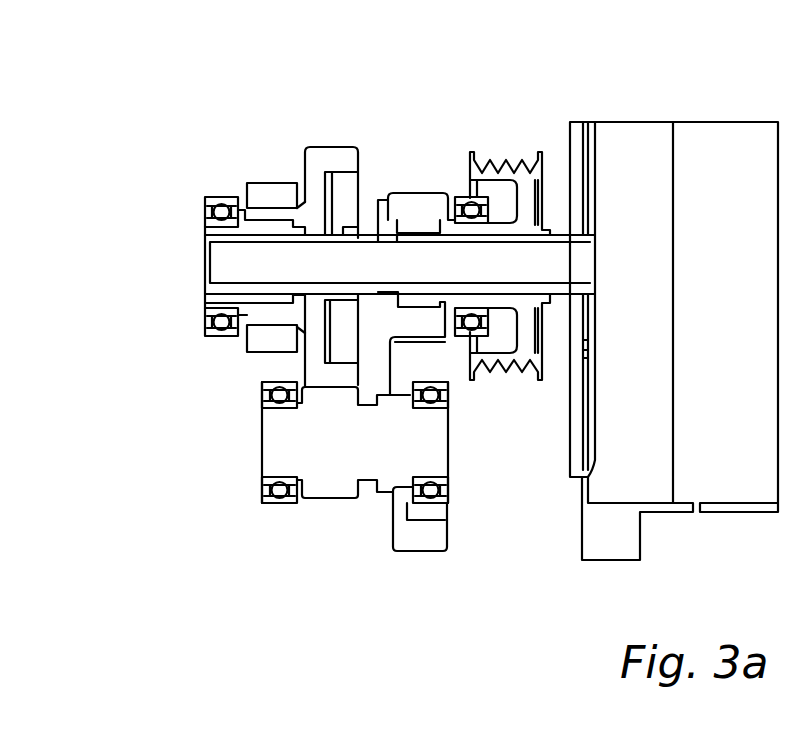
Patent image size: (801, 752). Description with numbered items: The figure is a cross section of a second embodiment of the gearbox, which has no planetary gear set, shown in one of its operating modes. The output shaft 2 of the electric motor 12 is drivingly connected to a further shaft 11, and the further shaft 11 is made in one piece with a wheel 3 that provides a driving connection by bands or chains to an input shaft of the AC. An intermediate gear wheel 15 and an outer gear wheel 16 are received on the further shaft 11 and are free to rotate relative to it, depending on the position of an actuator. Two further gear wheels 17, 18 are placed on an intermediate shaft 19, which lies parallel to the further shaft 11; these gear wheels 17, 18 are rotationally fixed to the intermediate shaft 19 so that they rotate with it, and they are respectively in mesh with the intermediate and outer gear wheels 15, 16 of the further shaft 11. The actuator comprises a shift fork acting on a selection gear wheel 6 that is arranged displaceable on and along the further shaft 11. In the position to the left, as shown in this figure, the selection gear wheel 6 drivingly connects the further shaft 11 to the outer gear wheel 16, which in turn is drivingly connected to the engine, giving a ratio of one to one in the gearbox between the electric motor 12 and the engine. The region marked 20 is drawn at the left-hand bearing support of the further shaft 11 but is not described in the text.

The output shaft 2 is at (555, 263).
The wheel 3 is at (507, 160).
The selection gear wheel 6 is at (318, 298).
The further shaft 11 is at (233, 268).
The electric motor 12 is at (728, 148).
The intermediate gear wheel 15 is at (422, 203).
The outer gear wheel 16 is at (340, 150).
The gear wheel 17 is at (398, 538).
The gear wheel 18 is at (332, 478).
The intermediate shaft 19 is at (280, 443).
The bearing housing 20 is at (267, 192).